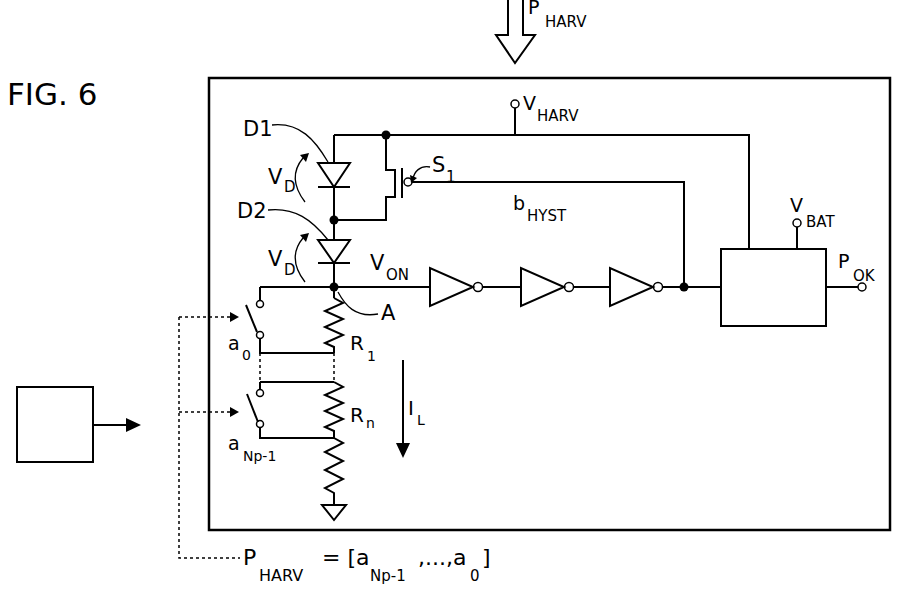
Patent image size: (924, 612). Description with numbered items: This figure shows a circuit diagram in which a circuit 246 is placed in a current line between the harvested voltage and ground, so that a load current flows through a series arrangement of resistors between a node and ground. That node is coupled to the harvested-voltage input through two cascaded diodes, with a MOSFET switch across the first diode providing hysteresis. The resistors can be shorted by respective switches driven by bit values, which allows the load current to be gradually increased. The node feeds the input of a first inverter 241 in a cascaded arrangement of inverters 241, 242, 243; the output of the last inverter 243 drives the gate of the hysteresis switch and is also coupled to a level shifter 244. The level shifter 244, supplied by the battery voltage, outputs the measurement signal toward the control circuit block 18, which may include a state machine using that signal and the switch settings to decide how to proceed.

The circuit 246 is at (709, 58).
The first inverter 241 is at (433, 267).
The second inverter 242 is at (537, 300).
The last inverter 243 is at (648, 277).
The level shifter 244 is at (775, 327).
The control circuit block 18 is at (60, 463).